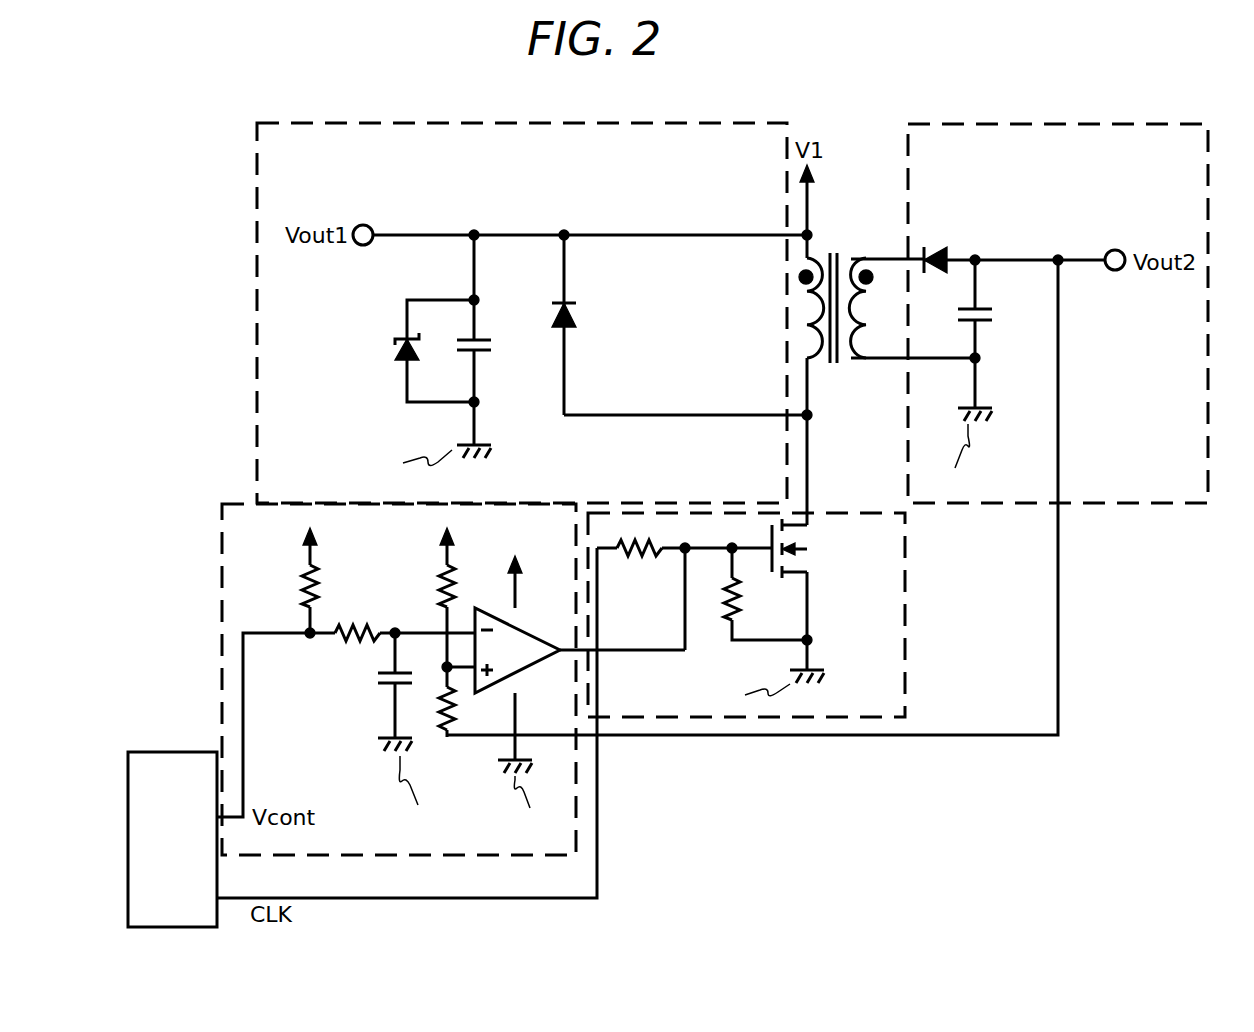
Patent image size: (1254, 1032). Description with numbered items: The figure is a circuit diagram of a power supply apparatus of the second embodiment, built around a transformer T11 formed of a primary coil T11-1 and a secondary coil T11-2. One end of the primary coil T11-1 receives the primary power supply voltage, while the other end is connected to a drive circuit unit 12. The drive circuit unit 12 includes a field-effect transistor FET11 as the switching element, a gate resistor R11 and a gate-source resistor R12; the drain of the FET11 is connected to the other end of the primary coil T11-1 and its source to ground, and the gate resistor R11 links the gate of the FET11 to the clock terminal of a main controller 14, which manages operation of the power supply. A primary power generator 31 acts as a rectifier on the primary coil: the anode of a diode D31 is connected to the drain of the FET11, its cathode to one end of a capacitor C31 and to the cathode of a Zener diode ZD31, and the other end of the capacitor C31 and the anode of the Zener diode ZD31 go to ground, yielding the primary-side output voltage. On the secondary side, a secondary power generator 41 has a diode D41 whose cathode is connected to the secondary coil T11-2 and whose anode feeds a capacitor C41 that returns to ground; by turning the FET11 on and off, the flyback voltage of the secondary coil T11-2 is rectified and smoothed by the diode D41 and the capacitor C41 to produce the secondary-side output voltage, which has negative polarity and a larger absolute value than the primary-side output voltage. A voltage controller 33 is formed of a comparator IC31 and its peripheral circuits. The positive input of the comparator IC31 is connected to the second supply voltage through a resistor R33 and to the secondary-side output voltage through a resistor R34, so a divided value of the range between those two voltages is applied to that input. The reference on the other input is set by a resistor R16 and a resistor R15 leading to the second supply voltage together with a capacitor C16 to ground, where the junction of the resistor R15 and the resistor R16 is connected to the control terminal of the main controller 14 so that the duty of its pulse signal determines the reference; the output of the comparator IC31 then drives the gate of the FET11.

The drive circuit unit 12 is at (905, 660).
The main controller 14 is at (185, 752).
The primary power generator 31 is at (345, 123).
The voltage controller 33 is at (222, 545).
The secondary power generator 41 is at (980, 124).
The transformer T11 is at (882, 338).
The primary coil T11-1 is at (812, 364).
The secondary coil T11-2 is at (848, 360).
The field-effect transistor FET11 is at (805, 566).
The gate resistor R11 is at (640, 560).
The gate-source resistor R12 is at (728, 624).
The diode D31 is at (572, 318).
The Zener diode ZD31 is at (395, 365).
The capacitor C31 is at (494, 355).
The diode D41 is at (938, 248).
The capacitor C41 is at (985, 322).
The resistor R15 is at (308, 590).
The resistor R16 is at (355, 642).
The capacitor C16 is at (385, 690).
The resistor R33 is at (445, 590).
The resistor R34 is at (443, 712).
The comparator IC31 is at (530, 668).